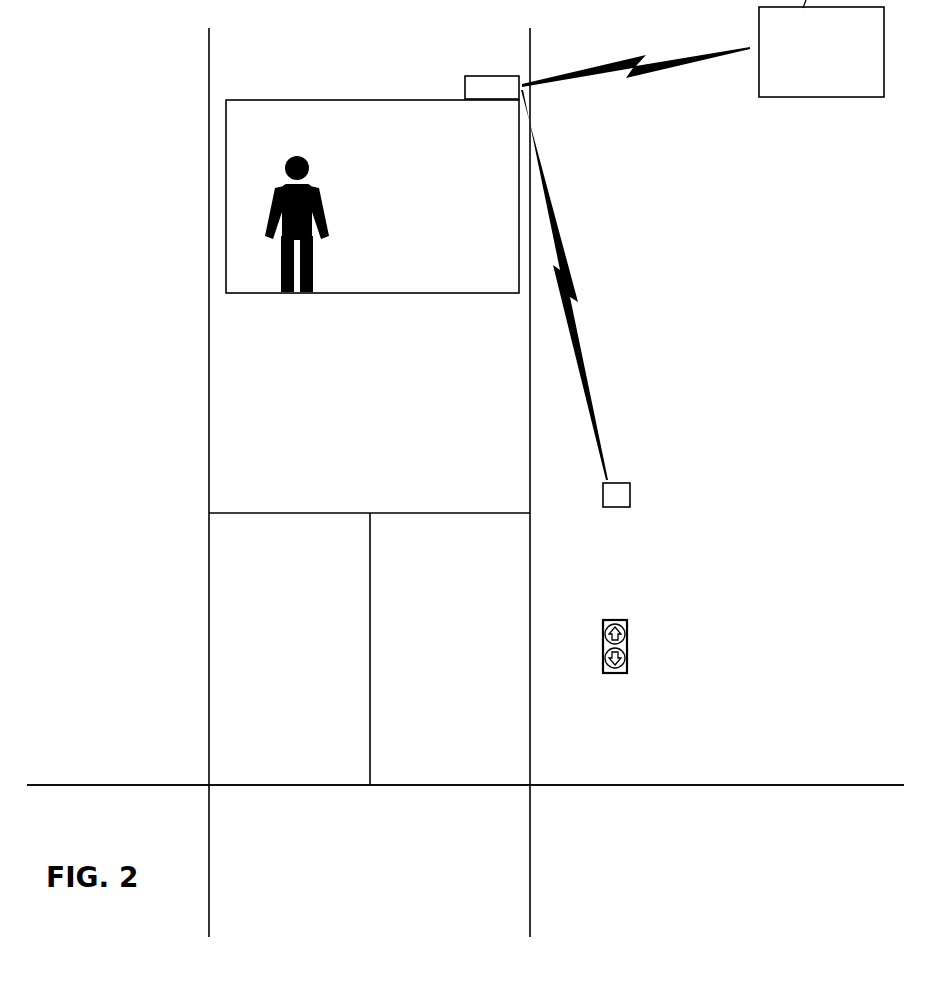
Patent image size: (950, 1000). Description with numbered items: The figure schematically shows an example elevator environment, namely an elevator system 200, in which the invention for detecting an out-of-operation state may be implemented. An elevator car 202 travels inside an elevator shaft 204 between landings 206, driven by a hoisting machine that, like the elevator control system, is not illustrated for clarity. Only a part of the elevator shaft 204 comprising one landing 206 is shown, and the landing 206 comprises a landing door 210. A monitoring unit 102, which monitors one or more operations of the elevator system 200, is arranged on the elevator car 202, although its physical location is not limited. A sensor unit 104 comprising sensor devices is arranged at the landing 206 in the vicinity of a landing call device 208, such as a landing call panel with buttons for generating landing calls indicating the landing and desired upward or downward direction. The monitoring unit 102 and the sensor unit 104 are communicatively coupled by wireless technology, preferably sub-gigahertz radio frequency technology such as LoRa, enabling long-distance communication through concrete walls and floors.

The elevator system 200 is at (124, 78).
The monitoring unit 102 is at (498, 76).
The sensor unit 104 is at (620, 483).
The elevator car 202 is at (404, 293).
The elevator shaft 204 is at (209, 330).
The landing 206 is at (180, 785).
The landing call device 208 is at (626, 620).
The landing door 210 is at (209, 555).